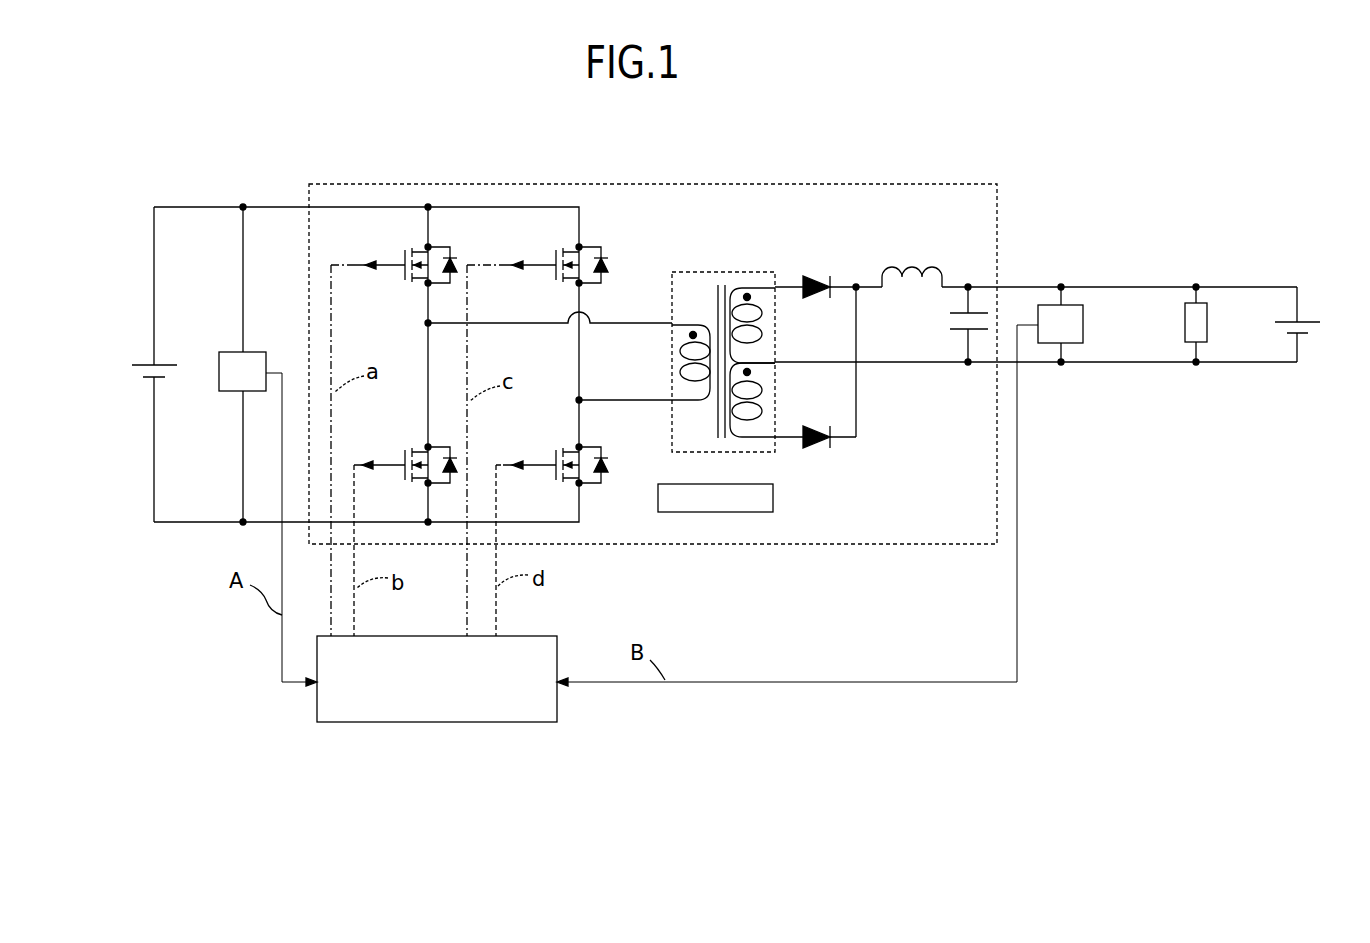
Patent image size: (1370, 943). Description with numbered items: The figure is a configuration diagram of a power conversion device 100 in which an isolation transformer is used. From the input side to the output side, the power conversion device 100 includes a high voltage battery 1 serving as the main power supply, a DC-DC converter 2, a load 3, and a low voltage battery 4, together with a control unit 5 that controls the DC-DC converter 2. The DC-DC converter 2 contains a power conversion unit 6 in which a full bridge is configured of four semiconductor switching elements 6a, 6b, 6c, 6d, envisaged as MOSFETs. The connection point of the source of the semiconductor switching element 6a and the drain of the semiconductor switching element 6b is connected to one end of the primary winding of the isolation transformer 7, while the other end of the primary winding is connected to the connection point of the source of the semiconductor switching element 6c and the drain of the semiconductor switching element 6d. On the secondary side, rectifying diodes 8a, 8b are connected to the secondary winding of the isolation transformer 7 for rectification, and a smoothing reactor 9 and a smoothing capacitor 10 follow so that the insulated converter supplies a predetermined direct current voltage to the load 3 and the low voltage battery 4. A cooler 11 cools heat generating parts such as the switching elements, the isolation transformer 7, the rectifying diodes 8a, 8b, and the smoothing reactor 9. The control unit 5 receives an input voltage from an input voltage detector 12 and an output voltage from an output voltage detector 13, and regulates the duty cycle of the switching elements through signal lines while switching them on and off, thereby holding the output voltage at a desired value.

The high voltage battery 1 is at (145, 362).
The DC-DC converter 2 is at (476, 184).
The load 3 is at (1208, 320).
The low voltage battery 4 is at (1305, 318).
The control unit 5 is at (330, 610).
The power conversion unit 6 is at (580, 207).
The semiconductor switching element 6a is at (400, 251).
The semiconductor switching element 6b is at (400, 450).
The semiconductor switching element 6c is at (551, 251).
The semiconductor switching element 6d is at (551, 452).
The isolation transformer 7 is at (698, 272).
The rectifying diode 8a is at (808, 275).
The rectifying diode 8b is at (815, 426).
The smoothing reactor 9 is at (906, 268).
The smoothing capacitor 10 is at (975, 312).
The cooler 11 is at (672, 484).
The input voltage detector 12 is at (222, 352).
The output voltage detector 13 is at (1072, 345).
The power conversion device 100 is at (850, 131).